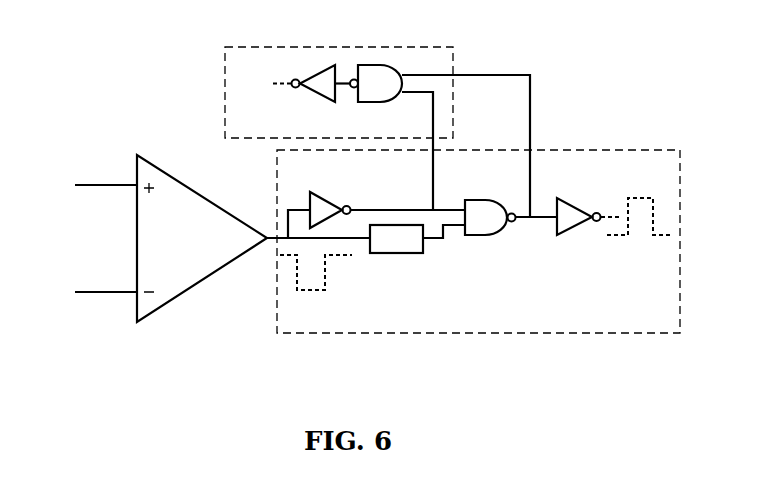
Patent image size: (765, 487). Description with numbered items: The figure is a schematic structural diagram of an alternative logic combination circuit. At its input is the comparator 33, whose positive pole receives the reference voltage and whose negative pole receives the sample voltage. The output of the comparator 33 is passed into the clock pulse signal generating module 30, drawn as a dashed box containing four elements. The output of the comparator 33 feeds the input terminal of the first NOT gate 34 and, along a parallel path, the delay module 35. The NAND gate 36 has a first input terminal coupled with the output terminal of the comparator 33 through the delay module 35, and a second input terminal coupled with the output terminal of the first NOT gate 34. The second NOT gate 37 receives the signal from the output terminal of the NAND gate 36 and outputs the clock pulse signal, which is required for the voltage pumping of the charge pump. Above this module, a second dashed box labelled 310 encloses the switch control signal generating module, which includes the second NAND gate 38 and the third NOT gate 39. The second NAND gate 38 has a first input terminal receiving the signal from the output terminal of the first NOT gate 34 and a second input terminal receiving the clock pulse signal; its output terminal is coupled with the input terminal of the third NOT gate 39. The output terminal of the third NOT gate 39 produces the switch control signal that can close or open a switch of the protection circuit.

The clock pulse signal generating module 30 is at (577, 149).
The signal output unit 310 is at (421, 47).
The comparator 33 is at (191, 265).
The first NOT gate 34 is at (316, 220).
The delay module 35 is at (396, 252).
The NAND gate 36 is at (480, 229).
The second NOT gate 37 is at (581, 227).
The second NAND gate 38 is at (380, 100).
The third NOT gate 39 is at (320, 96).